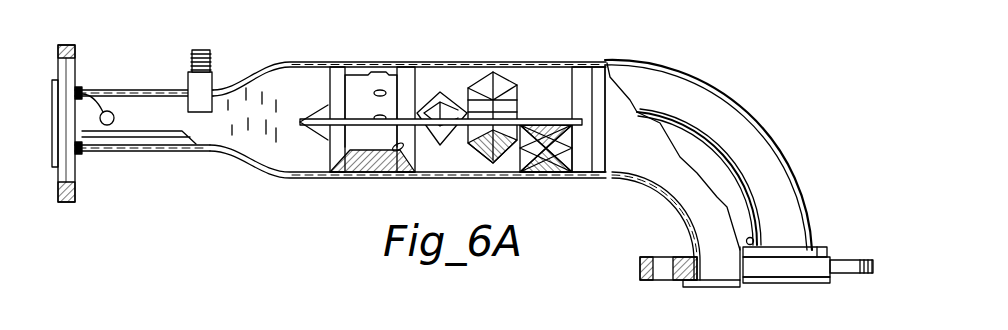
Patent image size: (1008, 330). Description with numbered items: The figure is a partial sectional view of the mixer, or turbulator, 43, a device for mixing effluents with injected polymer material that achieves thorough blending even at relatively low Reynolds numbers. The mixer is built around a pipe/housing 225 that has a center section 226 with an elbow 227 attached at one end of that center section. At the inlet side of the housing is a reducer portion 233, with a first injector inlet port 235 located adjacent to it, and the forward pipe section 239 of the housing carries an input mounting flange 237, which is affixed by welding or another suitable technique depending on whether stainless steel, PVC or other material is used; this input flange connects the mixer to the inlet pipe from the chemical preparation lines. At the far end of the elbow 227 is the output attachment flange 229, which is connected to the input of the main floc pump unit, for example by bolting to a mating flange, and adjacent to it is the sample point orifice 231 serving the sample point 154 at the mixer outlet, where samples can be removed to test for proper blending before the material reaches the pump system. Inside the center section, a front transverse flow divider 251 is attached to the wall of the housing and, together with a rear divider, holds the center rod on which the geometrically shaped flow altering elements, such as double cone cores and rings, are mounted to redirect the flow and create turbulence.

The mixer 43 is at (692, 50).
The sample point 154 is at (756, 238).
The pipe/housing 225 is at (773, 140).
The center section 226 is at (497, 58).
The elbow 227 is at (718, 110).
The output attachment flange 229 is at (858, 273).
The sample point orifice 231 is at (760, 245).
The reducer portion 233 is at (273, 62).
The first injector inlet port 235 is at (112, 124).
The input mounting flange 237 is at (76, 62).
The forward pipe section 239 is at (168, 90).
The front transverse flow divider 251 is at (316, 104).